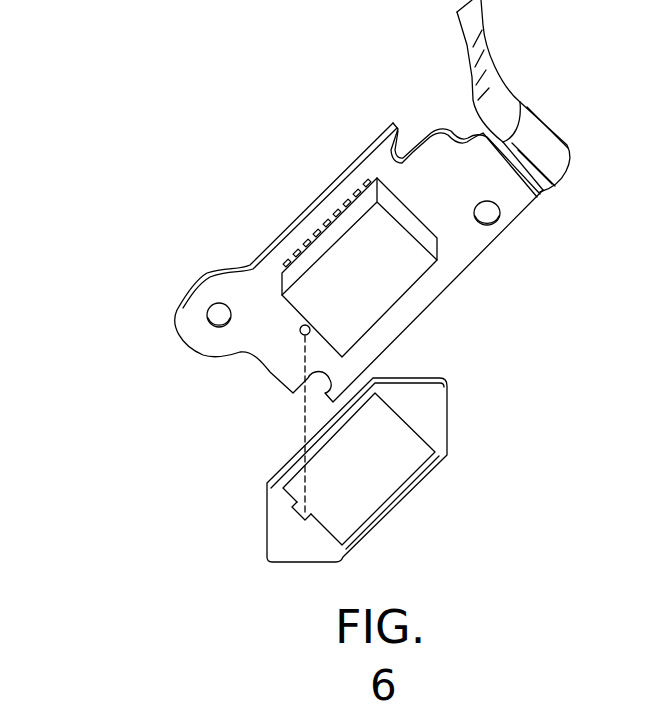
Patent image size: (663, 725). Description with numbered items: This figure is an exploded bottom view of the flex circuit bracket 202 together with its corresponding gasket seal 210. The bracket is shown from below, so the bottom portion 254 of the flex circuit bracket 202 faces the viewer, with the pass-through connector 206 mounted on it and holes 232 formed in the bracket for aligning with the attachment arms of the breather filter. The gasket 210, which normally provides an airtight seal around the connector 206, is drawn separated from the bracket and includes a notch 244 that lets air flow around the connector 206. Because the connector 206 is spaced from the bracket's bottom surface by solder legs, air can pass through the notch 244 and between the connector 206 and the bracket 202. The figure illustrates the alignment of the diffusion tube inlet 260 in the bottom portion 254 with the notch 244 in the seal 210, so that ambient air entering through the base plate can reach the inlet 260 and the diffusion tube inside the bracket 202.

The flex circuit bracket 202 is at (200, 114).
The pass-through connector 206 is at (359, 267).
The gasket 210 is at (433, 402).
The holes 232 is at (222, 313).
The notch 244 is at (310, 514).
The bottom portion 254 is at (468, 255).
The diffusion tube inlet 260 is at (304, 334).